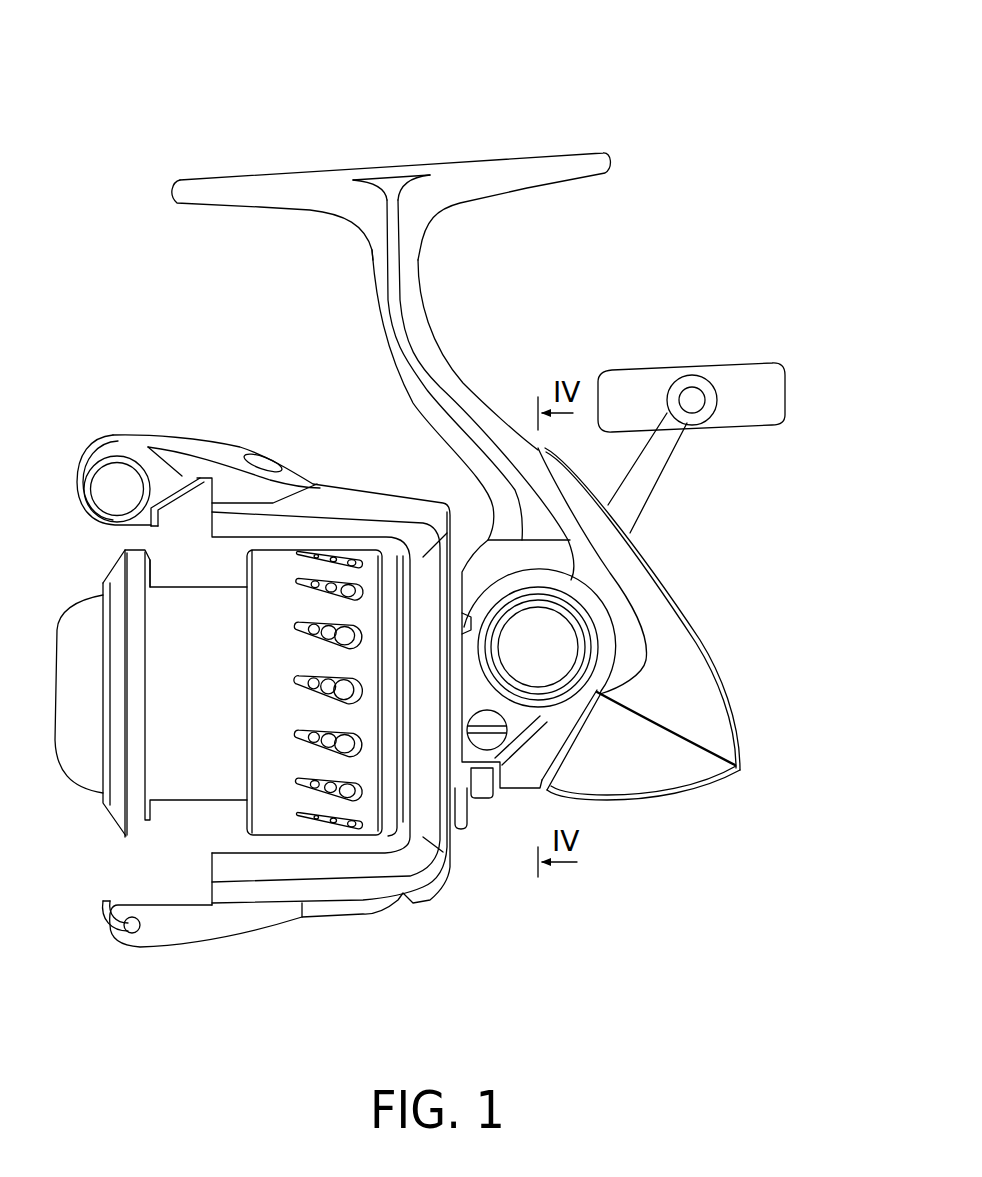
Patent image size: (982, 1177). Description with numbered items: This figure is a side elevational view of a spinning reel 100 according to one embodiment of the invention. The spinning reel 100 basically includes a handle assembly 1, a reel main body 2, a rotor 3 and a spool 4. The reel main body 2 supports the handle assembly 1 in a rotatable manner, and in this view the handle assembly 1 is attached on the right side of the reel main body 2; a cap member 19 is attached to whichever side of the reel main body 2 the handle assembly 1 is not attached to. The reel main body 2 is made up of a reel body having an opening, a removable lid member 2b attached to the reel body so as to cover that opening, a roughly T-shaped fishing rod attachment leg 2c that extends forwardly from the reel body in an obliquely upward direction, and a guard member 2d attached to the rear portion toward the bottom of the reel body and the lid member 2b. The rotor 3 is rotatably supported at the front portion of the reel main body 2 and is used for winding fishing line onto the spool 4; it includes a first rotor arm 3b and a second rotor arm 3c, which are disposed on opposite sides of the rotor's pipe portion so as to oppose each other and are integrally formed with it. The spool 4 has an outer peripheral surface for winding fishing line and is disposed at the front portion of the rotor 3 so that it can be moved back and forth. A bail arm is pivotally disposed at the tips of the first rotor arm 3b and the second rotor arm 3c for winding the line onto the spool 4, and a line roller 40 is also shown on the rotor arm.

The spinning reel 100 is at (519, 133).
The handle assembly 1 is at (717, 372).
The reel main body 2 is at (587, 548).
The lid member 2b is at (560, 737).
The fishing rod attachment leg 2c is at (450, 364).
The guard member 2d is at (700, 630).
The rotor 3 is at (280, 683).
The first rotor arm 3b is at (347, 530).
The second rotor arm 3c is at (365, 863).
The spool 4 is at (165, 806).
The cap member 19 is at (570, 600).
The line roller 40 is at (168, 432).